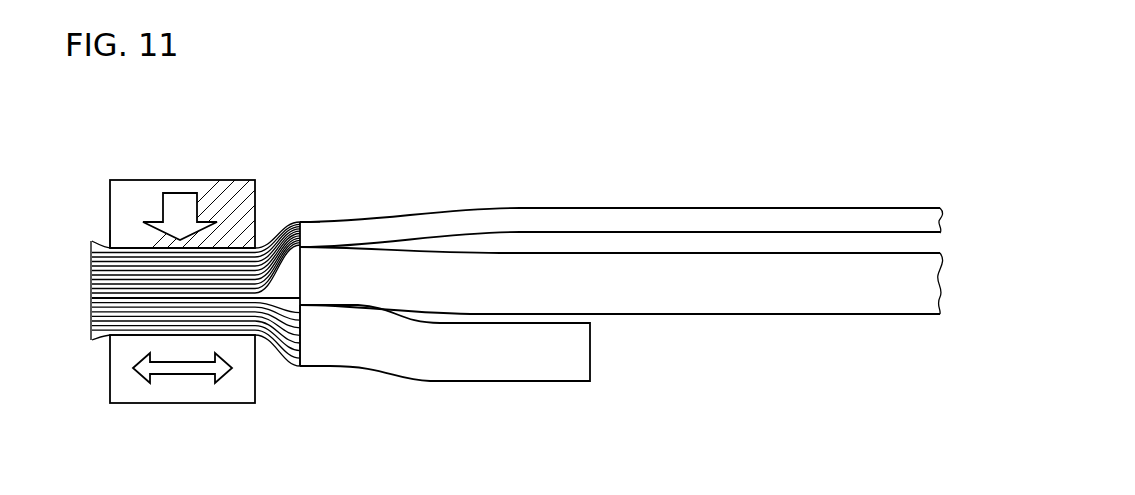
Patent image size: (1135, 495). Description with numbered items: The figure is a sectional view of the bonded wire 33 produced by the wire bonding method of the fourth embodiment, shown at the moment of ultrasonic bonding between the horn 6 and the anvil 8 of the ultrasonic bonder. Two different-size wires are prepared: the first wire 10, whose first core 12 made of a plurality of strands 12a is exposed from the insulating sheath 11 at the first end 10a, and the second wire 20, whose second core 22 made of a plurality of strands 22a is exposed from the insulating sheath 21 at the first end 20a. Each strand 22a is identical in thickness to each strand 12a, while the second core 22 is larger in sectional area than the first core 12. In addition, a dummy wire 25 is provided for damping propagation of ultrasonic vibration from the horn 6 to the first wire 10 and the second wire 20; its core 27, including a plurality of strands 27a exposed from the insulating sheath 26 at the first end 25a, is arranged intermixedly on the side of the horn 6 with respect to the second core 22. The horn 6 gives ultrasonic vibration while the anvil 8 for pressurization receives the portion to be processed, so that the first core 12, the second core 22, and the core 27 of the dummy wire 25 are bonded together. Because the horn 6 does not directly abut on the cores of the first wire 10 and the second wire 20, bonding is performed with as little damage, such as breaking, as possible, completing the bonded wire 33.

The horn 6 is at (237, 393).
The anvil 8 is at (230, 190).
The first wire 10 is at (621, 189).
The first end of the first wire 10a is at (312, 222).
The insulating sheath 11 is at (585, 213).
The first core 12 is at (263, 244).
The strands 12a is at (103, 246).
The second wire 20 is at (621, 288).
The first end of the second wire 20a is at (318, 242).
The insulating sheath 21 is at (766, 297).
The second core 22 is at (293, 250).
The strands 22a is at (88, 262).
The dummy wire 25 is at (445, 391).
The first end of the dummy wire 25a is at (320, 368).
The insulating sheath 26 is at (462, 373).
The core 27 is at (273, 354).
The strands 27a is at (105, 340).
The bonded wire 33 is at (658, 384).